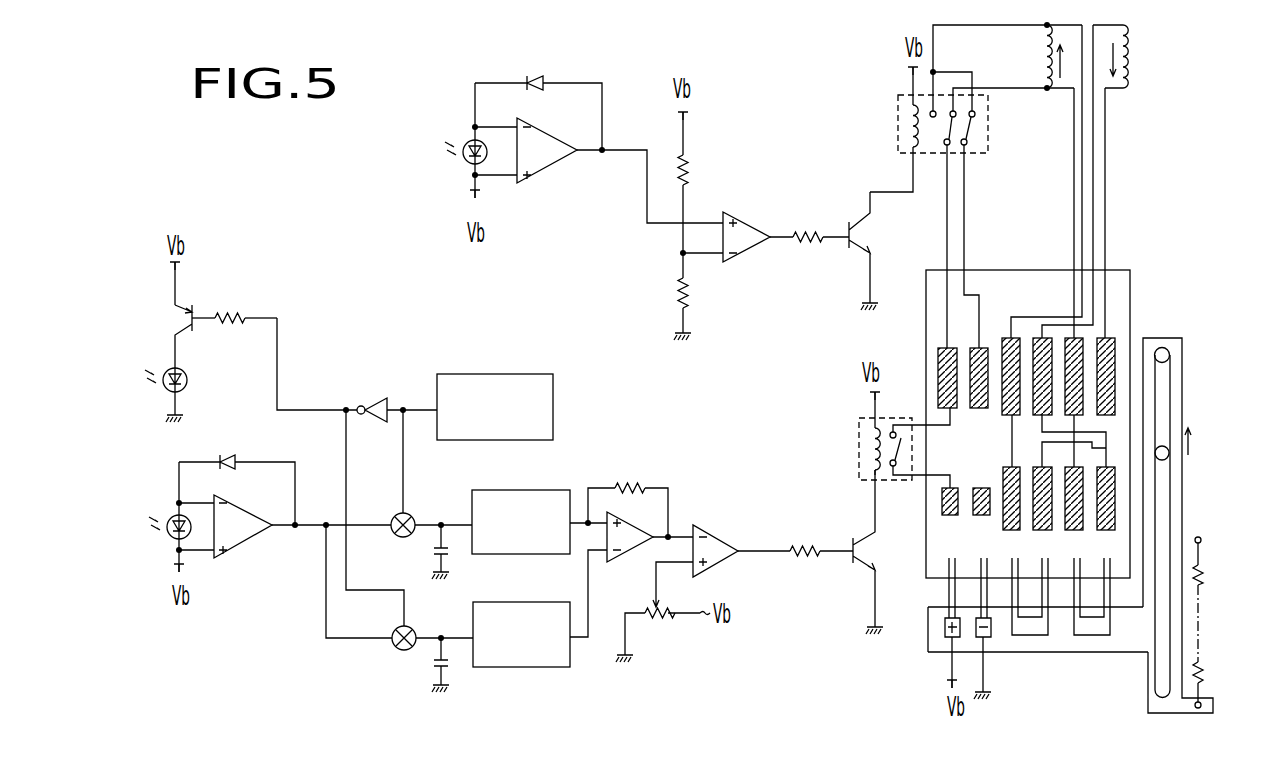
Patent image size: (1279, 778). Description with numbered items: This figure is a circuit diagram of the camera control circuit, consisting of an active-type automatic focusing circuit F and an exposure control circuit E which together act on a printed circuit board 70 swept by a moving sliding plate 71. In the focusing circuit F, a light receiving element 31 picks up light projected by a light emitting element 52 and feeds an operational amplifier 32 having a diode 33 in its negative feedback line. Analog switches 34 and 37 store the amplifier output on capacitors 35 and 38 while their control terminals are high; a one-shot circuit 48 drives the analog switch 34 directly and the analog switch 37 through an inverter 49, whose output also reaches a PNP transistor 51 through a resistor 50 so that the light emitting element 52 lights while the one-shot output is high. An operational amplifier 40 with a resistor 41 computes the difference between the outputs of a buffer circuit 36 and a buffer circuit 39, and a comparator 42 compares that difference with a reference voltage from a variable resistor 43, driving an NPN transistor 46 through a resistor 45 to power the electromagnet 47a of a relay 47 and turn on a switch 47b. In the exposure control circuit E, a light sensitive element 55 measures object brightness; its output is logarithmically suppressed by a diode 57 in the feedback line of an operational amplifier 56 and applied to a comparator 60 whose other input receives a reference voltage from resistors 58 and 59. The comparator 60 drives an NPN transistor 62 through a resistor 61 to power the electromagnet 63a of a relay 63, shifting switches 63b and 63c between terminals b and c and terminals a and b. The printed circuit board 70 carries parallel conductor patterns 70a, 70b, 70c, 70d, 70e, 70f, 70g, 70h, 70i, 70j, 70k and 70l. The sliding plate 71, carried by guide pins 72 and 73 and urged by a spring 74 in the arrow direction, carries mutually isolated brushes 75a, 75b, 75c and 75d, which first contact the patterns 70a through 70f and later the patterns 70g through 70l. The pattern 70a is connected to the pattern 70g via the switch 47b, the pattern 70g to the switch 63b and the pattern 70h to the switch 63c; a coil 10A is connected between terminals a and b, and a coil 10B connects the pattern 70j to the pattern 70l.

The coil 10A is at (1045, 58).
The coil 10B is at (1130, 52).
The light receiving photo-electro transducer element 31 is at (168, 542).
The operational amplifier 32 is at (250, 520).
The diode 33 is at (231, 455).
The analog switch 34 is at (413, 515).
The capacitor 35 is at (451, 552).
The buffer circuit 36 is at (503, 495).
The analog switch 37 is at (398, 650).
The capacitor 38 is at (451, 666).
The buffer circuit 39 is at (520, 602).
The operational amplifier 40 is at (628, 535).
The resistor 41 is at (626, 482).
The comparator 42 is at (712, 545).
The variable resistor 43 is at (656, 620).
The resistor 45 is at (808, 557).
The NPN transistor 46 is at (862, 562).
The relay 47 is at (858, 432).
The electromagnet 47a is at (865, 463).
The switch 47b is at (905, 470).
The one-shot circuit 48 is at (498, 374).
The inverter 49 is at (378, 397).
The resistor 50 is at (226, 314).
The PNP transistor 51 is at (186, 334).
The light emitting element 52 is at (188, 382).
The light sensitive element 55 is at (462, 162).
The operational amplifier 56 is at (545, 162).
The feedback diode 57 is at (545, 80).
The resistor 58 is at (692, 168).
The resistor 59 is at (692, 295).
The comparator 60 is at (745, 224).
The resistor 61 is at (810, 245).
The NPN transistor 62 is at (862, 250).
The relay 63 is at (898, 97).
The electromagnet 63a is at (898, 142).
The switch 63b is at (944, 150).
The switch 63c is at (968, 150).
The printed circuit board 70 is at (930, 572).
The conductor pattern 70a is at (950, 516).
The conductor pattern 70b is at (982, 516).
The conductor pattern 70c is at (1004, 515).
The conductor pattern 70d is at (1036, 515).
The conductor pattern 70e is at (1068, 515).
The conductor pattern 70f is at (1115, 516).
The conductor pattern 70g is at (935, 348).
The conductor pattern 70h is at (975, 348).
The conductor pattern 70i is at (1005, 338).
The conductor pattern 70j is at (1037, 338).
The conductor pattern 70k is at (1072, 412).
The conductor pattern 70l is at (1116, 345).
The sliding plate 71 is at (1175, 410).
The guide pin 72 is at (1170, 352).
The guide pin 73 is at (1170, 456).
The spring 74 is at (1205, 618).
The brush 75a is at (948, 588).
The brush 75b is at (982, 590).
The brush 75c is at (1032, 652).
The brush 75d is at (1098, 652).
The exposure control circuit E is at (608, 277).
The automatic focusing circuit F is at (590, 442).